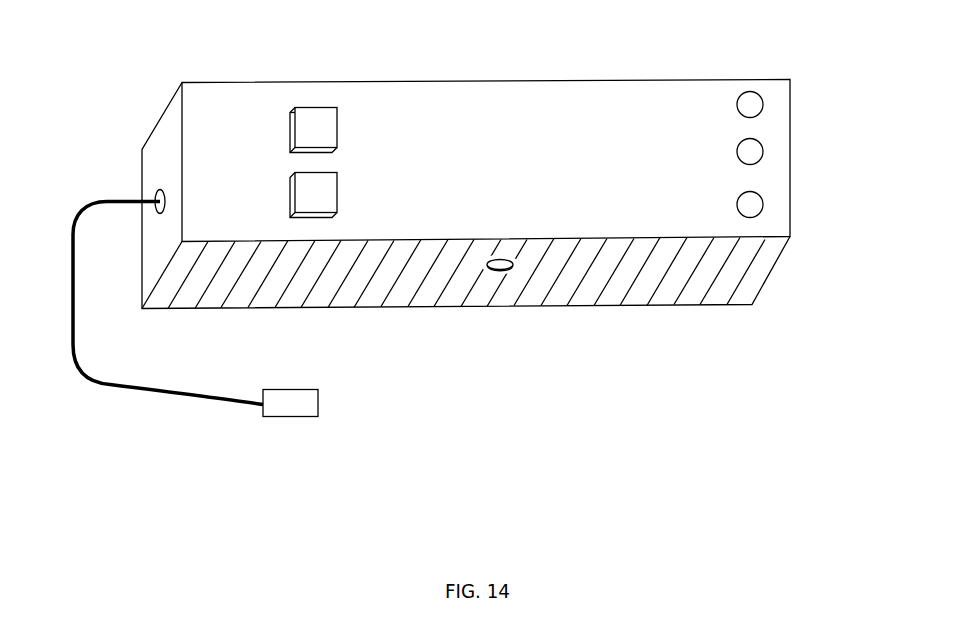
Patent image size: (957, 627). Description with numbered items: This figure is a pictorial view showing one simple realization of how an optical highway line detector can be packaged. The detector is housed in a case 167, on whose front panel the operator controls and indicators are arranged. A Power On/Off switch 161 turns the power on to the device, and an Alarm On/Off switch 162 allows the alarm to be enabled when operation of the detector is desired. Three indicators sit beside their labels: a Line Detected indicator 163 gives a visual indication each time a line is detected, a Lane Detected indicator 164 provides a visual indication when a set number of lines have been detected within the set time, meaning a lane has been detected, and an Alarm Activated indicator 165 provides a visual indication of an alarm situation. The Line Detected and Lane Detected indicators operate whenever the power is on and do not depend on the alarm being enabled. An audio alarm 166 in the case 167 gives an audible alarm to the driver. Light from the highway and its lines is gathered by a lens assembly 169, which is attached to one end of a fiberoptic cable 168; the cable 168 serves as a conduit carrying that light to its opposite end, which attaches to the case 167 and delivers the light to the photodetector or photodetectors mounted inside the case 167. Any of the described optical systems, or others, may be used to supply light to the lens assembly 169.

The Power On/Off switch 161 is at (330, 133).
The Alarm On/Off switch 162 is at (330, 198).
The Line Detected indicator 163 is at (752, 105).
The Lane Detected indicator 164 is at (752, 152).
The Alarm Activated indicator 165 is at (752, 205).
The audio alarm 166 is at (495, 273).
The case 167 is at (497, 87).
The fiberoptic cable 168 is at (86, 378).
The lens assembly 169 is at (313, 397).